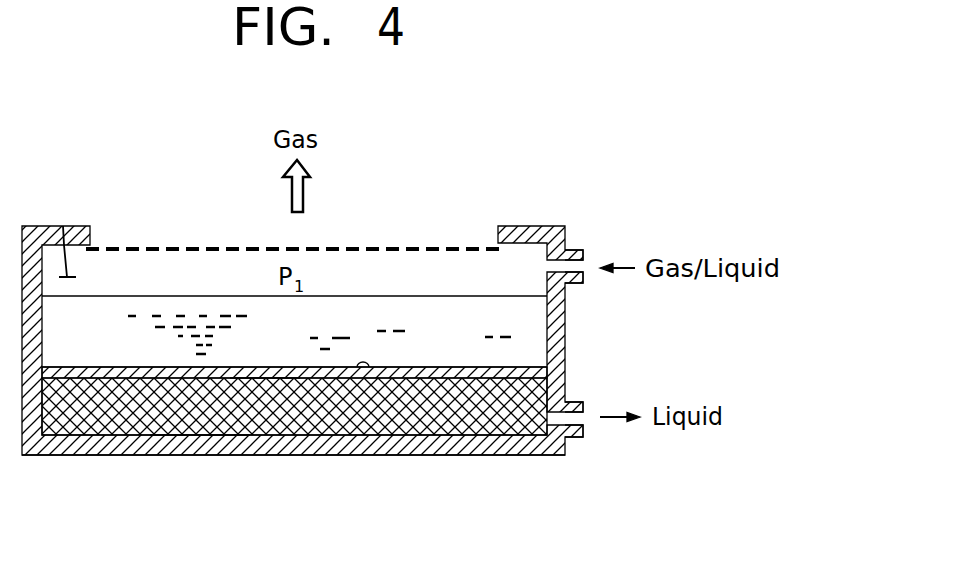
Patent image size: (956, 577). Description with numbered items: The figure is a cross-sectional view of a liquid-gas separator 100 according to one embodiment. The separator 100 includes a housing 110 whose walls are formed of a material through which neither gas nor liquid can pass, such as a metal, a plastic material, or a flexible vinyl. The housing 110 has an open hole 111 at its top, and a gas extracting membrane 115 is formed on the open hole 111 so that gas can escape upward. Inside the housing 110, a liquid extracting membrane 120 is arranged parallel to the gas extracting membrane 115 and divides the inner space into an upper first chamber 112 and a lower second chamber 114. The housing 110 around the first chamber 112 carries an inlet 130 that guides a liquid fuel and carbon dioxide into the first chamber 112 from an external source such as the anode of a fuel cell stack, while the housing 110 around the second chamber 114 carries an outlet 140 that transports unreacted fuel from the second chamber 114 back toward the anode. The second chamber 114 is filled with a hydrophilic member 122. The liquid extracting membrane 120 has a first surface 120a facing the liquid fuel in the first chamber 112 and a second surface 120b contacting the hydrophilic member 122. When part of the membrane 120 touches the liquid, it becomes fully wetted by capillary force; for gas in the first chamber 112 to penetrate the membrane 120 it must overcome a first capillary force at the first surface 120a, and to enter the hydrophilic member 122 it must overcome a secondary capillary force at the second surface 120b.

The liquid-gas separator 100 is at (535, 172).
The housing 110 is at (508, 440).
The open hole 111 is at (497, 226).
The first chamber 112 is at (63, 226).
The second chamber 114 is at (267, 408).
The gas extracting membrane 115 is at (157, 248).
The liquid extracting membrane 120 is at (125, 368).
The first surface 120a is at (363, 368).
The second surface 120b is at (440, 378).
The hydrophilic member 122 is at (197, 436).
The inlet 130 is at (584, 252).
The outlet 140 is at (577, 437).